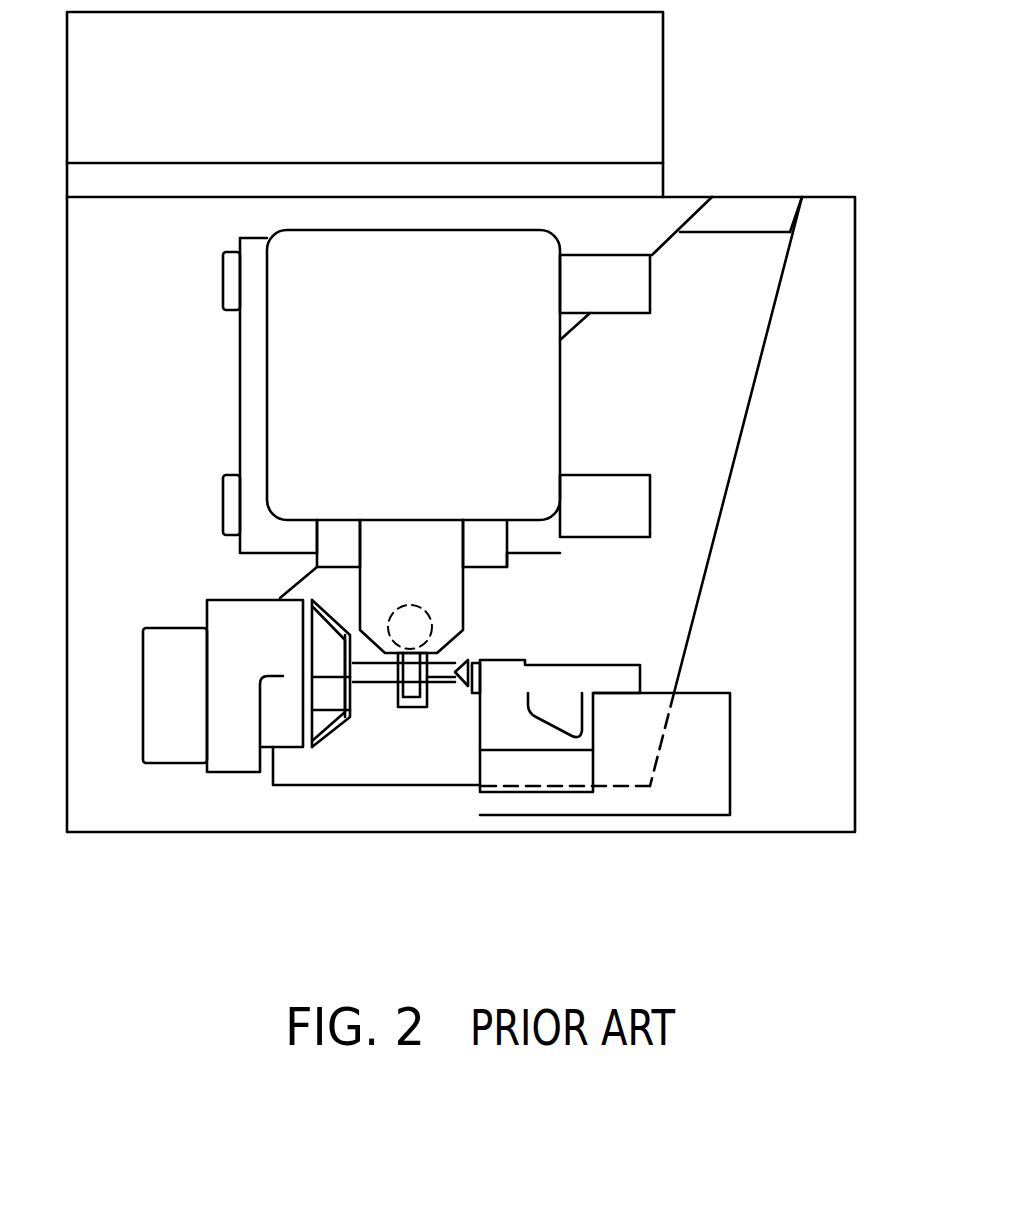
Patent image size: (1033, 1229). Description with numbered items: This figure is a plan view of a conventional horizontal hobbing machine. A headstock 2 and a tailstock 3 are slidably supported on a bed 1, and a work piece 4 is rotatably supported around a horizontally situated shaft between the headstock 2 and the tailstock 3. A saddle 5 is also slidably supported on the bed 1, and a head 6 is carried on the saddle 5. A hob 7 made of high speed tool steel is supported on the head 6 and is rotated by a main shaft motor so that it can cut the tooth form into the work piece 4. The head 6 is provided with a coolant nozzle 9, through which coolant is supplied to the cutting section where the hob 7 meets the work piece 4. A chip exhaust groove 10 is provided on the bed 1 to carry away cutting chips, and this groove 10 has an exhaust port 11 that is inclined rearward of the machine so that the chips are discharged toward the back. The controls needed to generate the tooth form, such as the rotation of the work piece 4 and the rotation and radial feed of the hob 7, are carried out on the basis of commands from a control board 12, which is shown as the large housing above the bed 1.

The bed 1 is at (120, 803).
The headstock 2 is at (220, 760).
The tailstock 3 is at (500, 693).
The work piece 4 is at (411, 700).
The saddle 5 is at (292, 348).
The head 6 is at (437, 600).
The hob 7 is at (397, 614).
The coolant nozzle 9 is at (402, 690).
The chip exhaust groove 10 is at (678, 608).
The exhaust port 11 is at (738, 212).
The control board 12 is at (633, 60).